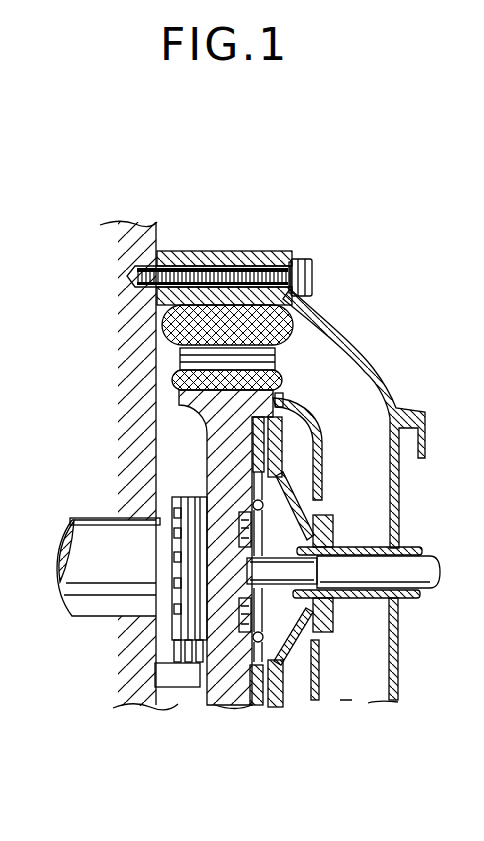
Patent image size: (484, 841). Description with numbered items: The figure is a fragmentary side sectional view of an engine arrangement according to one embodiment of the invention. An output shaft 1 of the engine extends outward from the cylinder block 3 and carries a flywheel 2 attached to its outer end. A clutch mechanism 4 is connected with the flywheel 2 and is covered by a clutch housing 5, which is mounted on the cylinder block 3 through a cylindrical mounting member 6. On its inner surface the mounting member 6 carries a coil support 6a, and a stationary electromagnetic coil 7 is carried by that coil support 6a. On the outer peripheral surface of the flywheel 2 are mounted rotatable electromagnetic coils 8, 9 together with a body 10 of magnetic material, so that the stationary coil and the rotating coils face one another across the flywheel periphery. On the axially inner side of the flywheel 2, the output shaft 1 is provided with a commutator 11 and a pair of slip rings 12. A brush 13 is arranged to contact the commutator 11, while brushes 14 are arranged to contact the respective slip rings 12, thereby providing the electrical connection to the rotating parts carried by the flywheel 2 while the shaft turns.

The output shaft 1 is at (90, 528).
The flywheel 2 is at (212, 428).
The cylinder block 3 is at (176, 214).
The clutch mechanism 4 is at (287, 700).
The clutch housing 5 is at (380, 366).
The cylindrical mounting member 6 is at (216, 259).
The coil support 6a is at (240, 255).
The stationary electromagnetic coil 7 is at (300, 318).
The rotatable electromagnetic coil 8 is at (285, 382).
The rotatable electromagnetic coil 9 is at (260, 388).
The body of magnetic material 10 is at (287, 365).
The commutator 11 is at (156, 472).
The slip rings 12 is at (200, 497).
The brush 13 is at (173, 647).
The brushes 14 is at (205, 655).